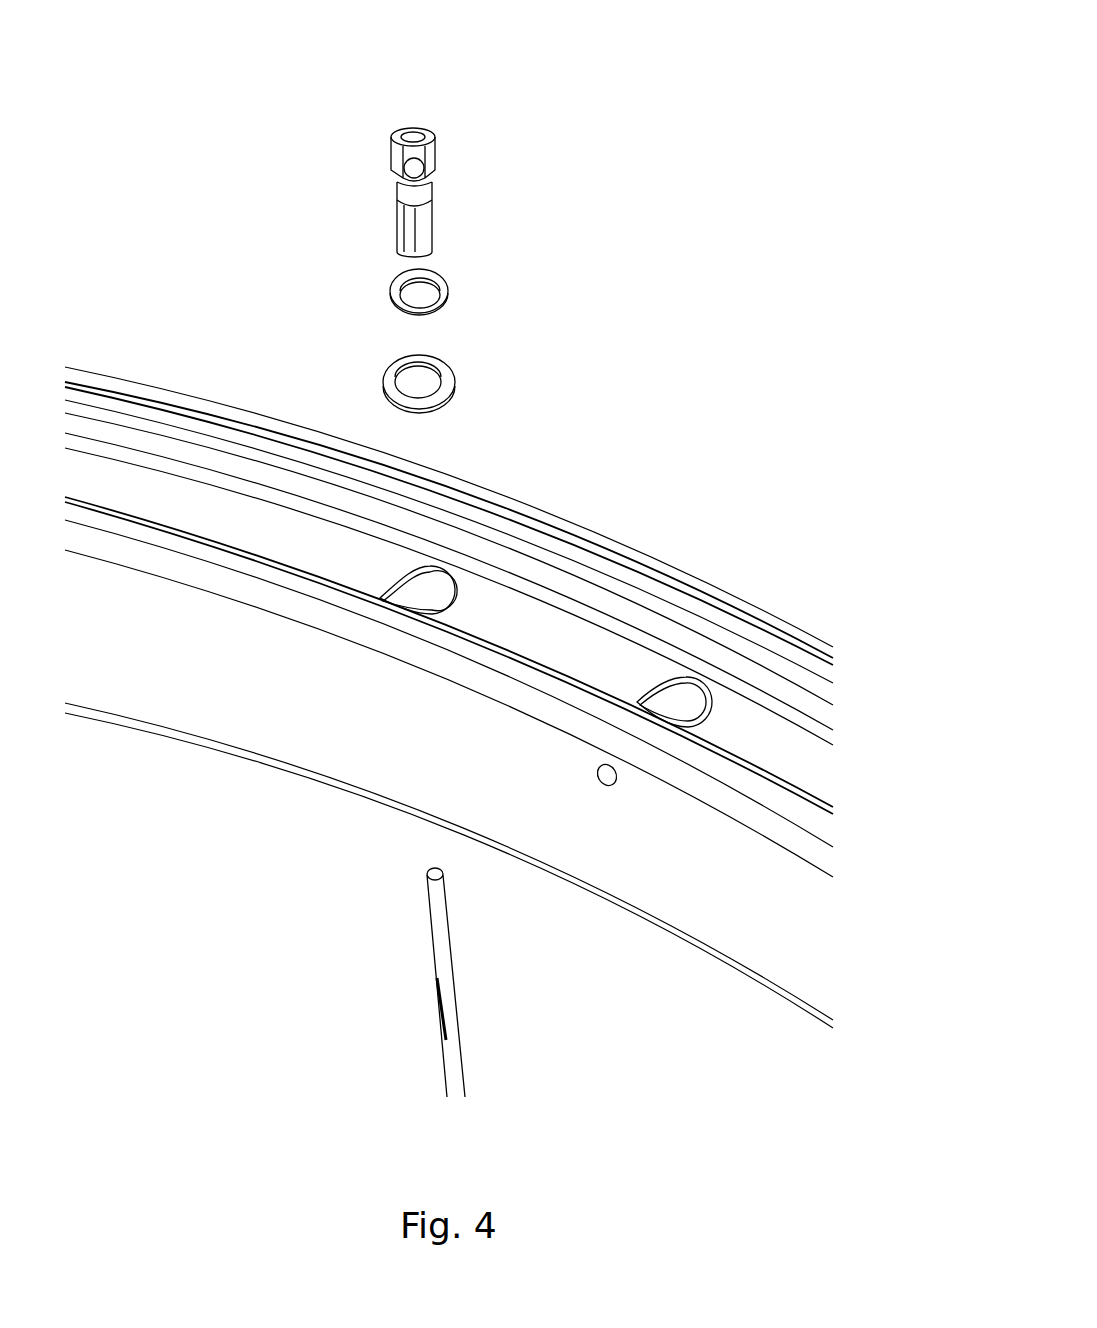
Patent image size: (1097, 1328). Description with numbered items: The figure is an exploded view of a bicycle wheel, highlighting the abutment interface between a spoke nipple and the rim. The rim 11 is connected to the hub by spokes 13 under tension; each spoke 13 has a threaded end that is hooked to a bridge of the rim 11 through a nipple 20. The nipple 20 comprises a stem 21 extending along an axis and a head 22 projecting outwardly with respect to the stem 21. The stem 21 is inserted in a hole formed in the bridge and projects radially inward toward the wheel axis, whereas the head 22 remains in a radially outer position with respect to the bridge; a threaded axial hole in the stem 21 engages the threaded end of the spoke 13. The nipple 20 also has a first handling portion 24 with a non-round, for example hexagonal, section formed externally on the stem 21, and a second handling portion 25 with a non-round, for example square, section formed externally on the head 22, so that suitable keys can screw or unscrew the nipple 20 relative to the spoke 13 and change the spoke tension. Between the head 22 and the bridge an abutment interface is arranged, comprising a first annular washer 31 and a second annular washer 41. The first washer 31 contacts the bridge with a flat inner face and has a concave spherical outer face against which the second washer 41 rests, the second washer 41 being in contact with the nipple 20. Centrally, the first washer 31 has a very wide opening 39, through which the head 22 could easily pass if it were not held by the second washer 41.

The rim 11 is at (633, 565).
The spoke 13 is at (443, 930).
The nipple 20 is at (428, 130).
The stem 21 is at (427, 193).
The head 22 is at (418, 133).
The first handling portion 24 is at (433, 156).
The second handling portion 25 is at (420, 238).
The first annular washer 31 is at (446, 354).
The opening 39 is at (433, 384).
The second annular washer 41 is at (447, 295).